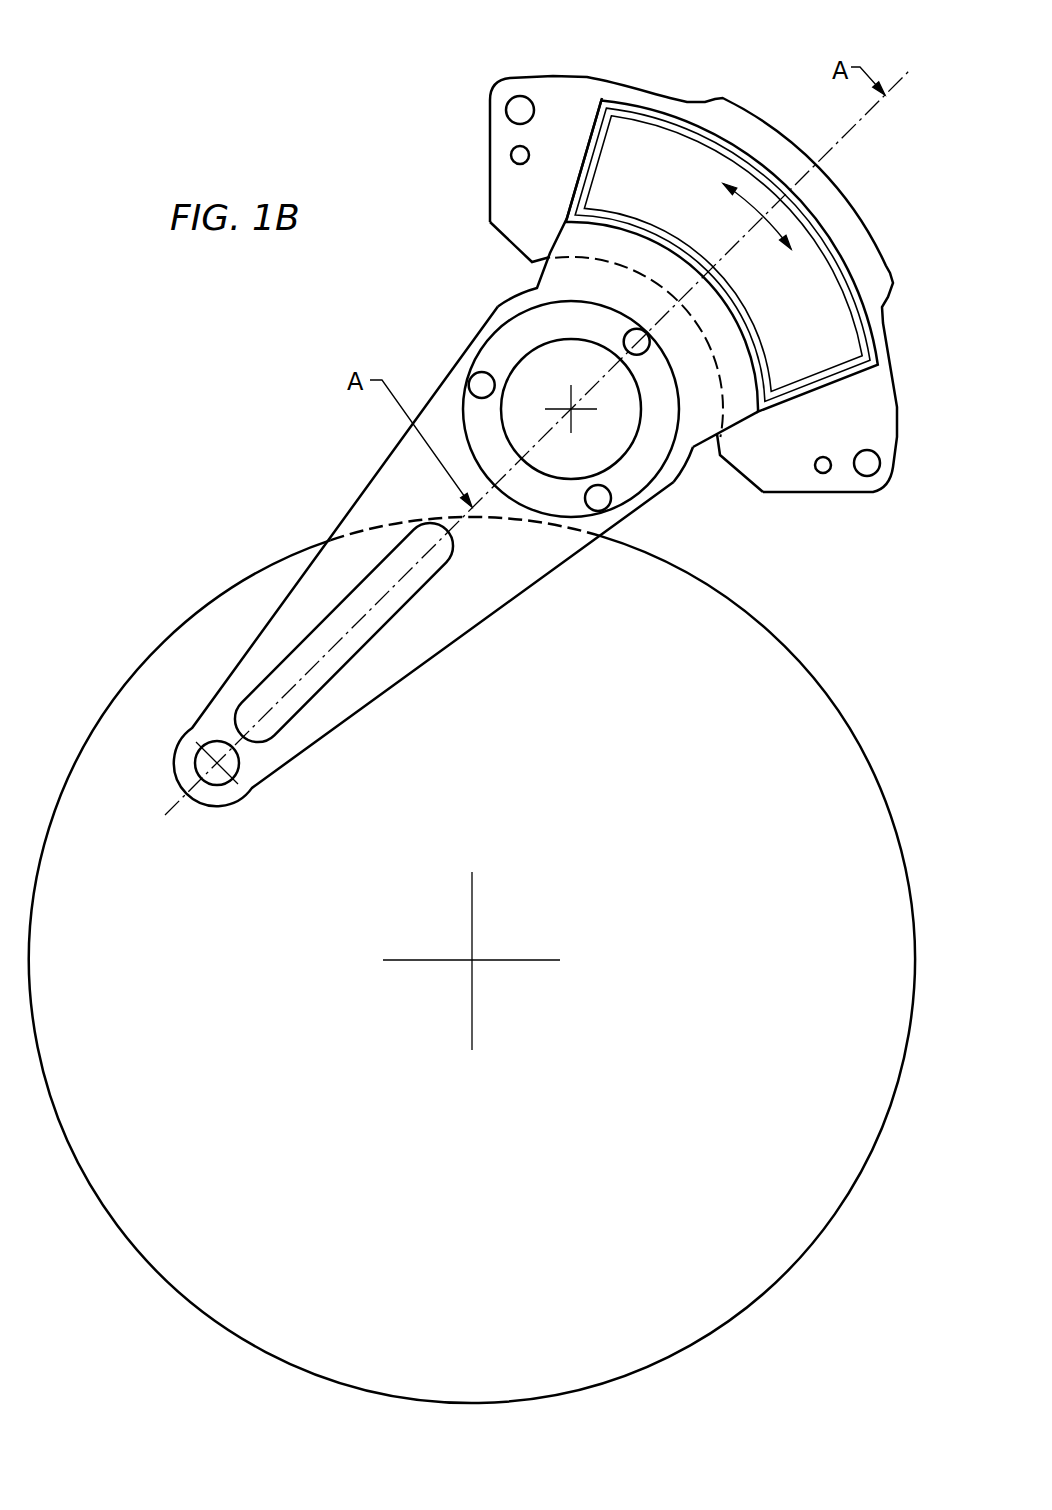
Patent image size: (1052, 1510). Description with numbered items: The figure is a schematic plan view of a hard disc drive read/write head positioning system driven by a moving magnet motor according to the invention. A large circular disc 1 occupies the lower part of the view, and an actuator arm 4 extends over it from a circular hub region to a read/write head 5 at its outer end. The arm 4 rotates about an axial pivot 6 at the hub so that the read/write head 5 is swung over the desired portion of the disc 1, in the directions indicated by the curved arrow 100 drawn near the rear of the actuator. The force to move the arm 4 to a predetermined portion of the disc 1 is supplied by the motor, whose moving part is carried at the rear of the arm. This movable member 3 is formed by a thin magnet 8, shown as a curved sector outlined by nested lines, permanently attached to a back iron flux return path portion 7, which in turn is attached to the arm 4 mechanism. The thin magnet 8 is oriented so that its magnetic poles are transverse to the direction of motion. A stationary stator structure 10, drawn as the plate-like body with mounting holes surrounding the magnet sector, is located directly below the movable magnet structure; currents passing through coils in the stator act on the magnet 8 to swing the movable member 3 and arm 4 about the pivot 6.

The disc 1 is at (770, 670).
The movable member 3 is at (513, 302).
The arm 4 is at (386, 470).
The read/write head 5 is at (217, 763).
The axial pivot 6 is at (571, 409).
The back iron flux return path portion 7 is at (757, 393).
The thin magnet 8 is at (660, 147).
The stationary stator structure 10 is at (503, 142).
The arrow 100 is at (772, 223).